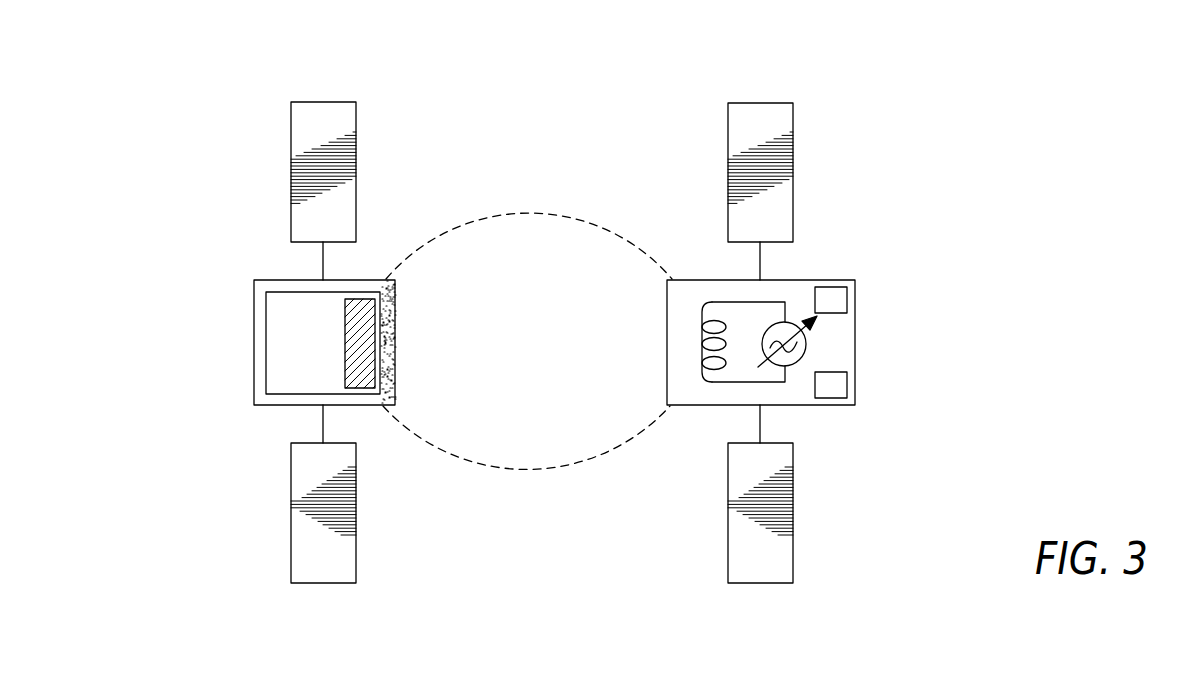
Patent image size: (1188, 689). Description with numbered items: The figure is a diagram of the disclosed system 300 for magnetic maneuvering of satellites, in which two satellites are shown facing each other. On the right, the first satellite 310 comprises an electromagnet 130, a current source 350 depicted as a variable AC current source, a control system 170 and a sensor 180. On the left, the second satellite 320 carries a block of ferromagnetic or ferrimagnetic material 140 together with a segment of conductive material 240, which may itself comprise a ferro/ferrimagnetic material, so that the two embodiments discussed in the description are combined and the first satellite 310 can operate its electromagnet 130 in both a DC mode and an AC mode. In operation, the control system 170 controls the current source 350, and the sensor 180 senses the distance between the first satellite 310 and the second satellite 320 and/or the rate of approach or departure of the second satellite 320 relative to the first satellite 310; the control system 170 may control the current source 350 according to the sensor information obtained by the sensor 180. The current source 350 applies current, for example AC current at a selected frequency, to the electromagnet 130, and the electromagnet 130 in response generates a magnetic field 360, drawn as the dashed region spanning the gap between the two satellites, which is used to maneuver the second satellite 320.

The system for magnetic maneuvering of satellites 300 is at (928, 660).
The second satellite 320 is at (222, 323).
The first satellite 310 is at (867, 359).
The ferromagnetic or ferrimagnetic material 140 is at (358, 301).
The conductive material 240 is at (387, 281).
The magnetic field 360 is at (527, 212).
The electromagnet 130 is at (702, 318).
The current source 350 is at (796, 314).
The control system 170 is at (838, 296).
The sensor 180 is at (835, 387).